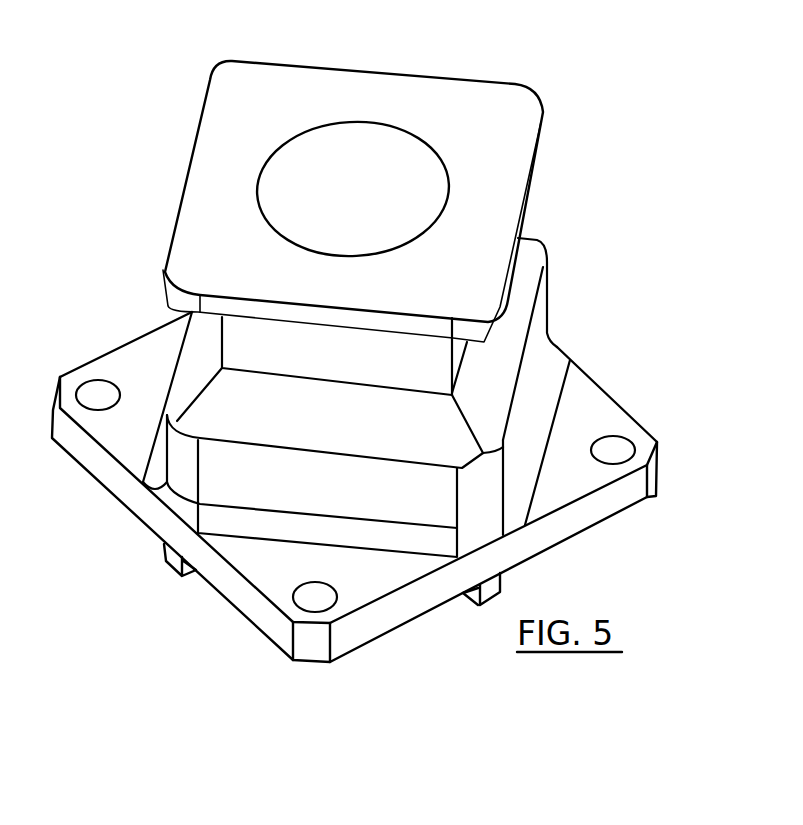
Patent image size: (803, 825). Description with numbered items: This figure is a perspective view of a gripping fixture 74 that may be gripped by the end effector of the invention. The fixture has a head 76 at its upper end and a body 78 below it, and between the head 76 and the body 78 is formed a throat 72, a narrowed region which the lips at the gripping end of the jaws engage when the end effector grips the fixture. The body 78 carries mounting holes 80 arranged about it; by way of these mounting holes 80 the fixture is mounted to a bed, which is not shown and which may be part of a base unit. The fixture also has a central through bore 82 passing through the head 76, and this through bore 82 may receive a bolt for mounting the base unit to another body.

The throat 72 is at (521, 273).
The gripping fixture 74 is at (571, 293).
The head 76 is at (472, 98).
The body 78 is at (597, 398).
The mounting holes 80 is at (617, 452).
The central through bore 82 is at (318, 176).